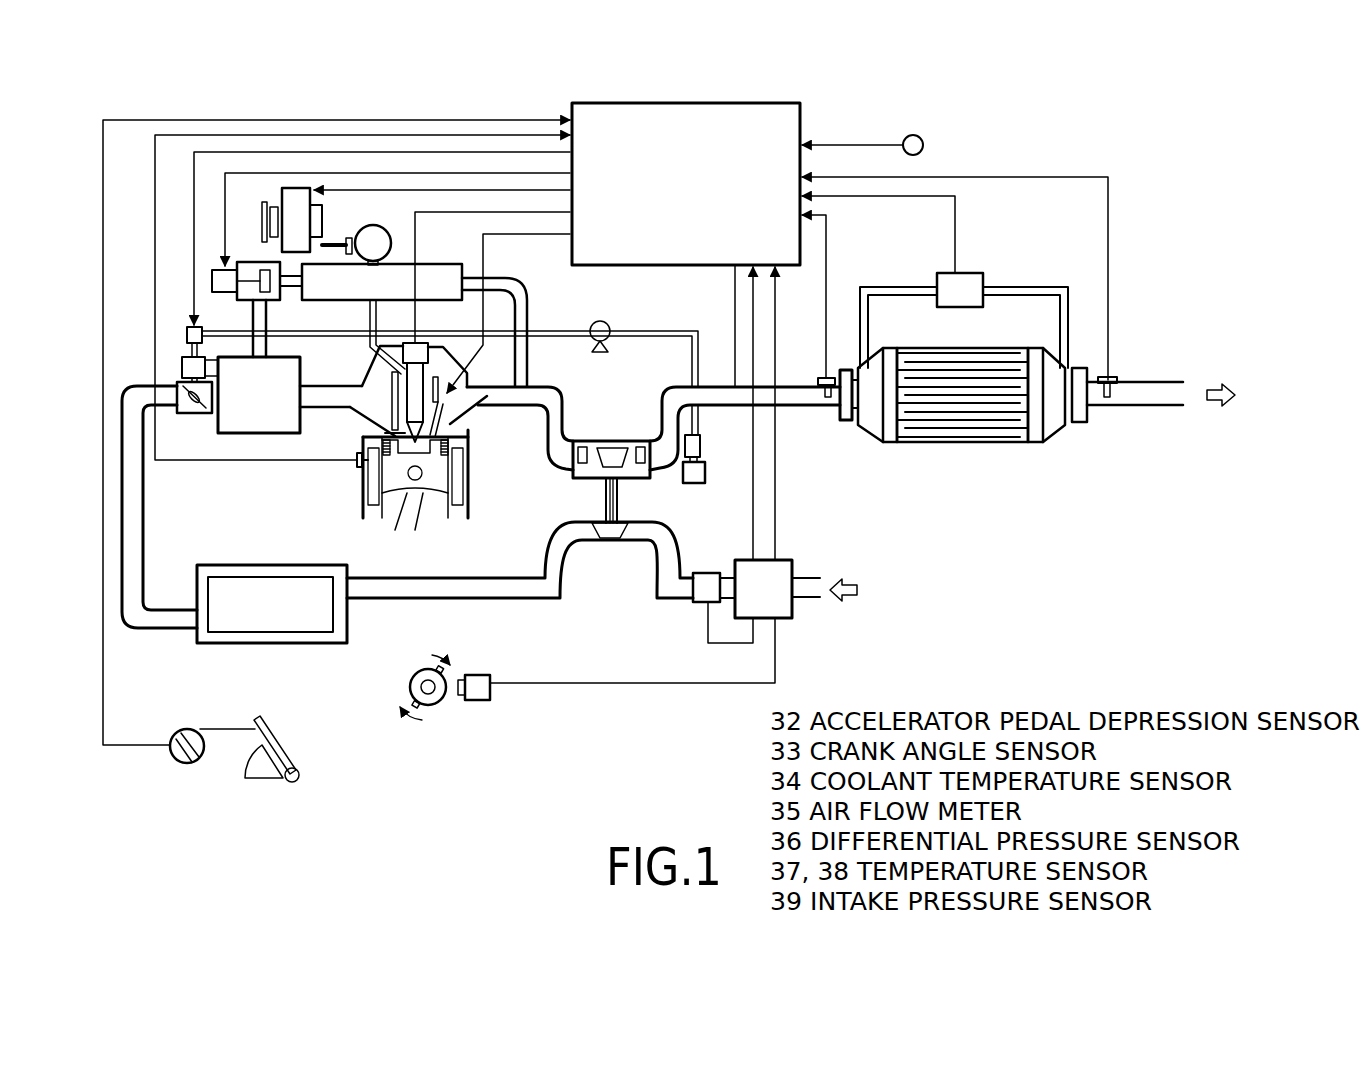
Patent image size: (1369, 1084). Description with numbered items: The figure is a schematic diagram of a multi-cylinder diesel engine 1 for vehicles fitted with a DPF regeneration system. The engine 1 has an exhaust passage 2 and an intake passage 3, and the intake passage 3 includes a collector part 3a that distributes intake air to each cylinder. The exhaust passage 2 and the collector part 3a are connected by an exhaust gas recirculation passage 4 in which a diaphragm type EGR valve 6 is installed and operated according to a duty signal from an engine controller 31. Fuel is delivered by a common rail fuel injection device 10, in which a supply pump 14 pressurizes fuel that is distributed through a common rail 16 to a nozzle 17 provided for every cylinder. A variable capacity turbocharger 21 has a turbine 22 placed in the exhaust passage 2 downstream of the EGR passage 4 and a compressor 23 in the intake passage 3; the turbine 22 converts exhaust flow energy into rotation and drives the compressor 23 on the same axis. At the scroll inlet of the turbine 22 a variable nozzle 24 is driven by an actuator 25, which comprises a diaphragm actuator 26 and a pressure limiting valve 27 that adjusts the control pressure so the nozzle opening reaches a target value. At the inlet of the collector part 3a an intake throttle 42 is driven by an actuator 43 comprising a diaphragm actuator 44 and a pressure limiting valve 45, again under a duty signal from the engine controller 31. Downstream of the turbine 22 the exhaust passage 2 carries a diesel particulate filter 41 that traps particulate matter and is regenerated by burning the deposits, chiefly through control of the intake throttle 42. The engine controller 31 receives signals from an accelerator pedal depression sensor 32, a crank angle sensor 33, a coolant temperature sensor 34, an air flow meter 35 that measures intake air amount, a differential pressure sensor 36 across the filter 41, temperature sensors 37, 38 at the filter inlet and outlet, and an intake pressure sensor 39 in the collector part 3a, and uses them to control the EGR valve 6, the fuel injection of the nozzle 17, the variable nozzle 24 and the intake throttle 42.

The diesel engine 1 is at (477, 519).
The exhaust passage 2 is at (558, 406).
The intake passage 3 is at (324, 388).
The collector part 3a is at (230, 418).
The exhaust gas recirculation (EGR) passage 4 is at (529, 303).
The EGR valve 6 is at (230, 299).
The common rail fuel injection device 10 is at (344, 222).
The supply pump 14 is at (295, 188).
The common rail 16 is at (379, 226).
The nozzle 17 is at (429, 352).
The variable capacity turbocharger 21 is at (620, 550).
The turbine 22 is at (600, 462).
The compressor 23 is at (607, 530).
The variable nozzle 24 is at (573, 460).
The actuator 25 is at (712, 465).
The diaphragm actuator 26 is at (683, 478).
The pressure limiting valve 27 is at (708, 445).
The engine controller 31 is at (690, 103).
The accelerator pedal depression sensor 32 is at (177, 762).
The crank angle sensor 33 is at (482, 700).
The coolant temperature sensor 34 is at (353, 463).
The air flow meter 35 is at (700, 605).
The differential pressure sensor 36 is at (968, 275).
The temperature sensor 37 is at (823, 378).
The temperature sensor 38 is at (1115, 376).
The intake pressure sensor 39 is at (923, 143).
The diesel particulate filter (DPF) 41 is at (1003, 430).
The intake throttle 42 is at (128, 392).
The actuator 43 is at (176, 357).
The diaphragm actuator 44 is at (182, 365).
The pressure limiting valve 45 is at (187, 332).